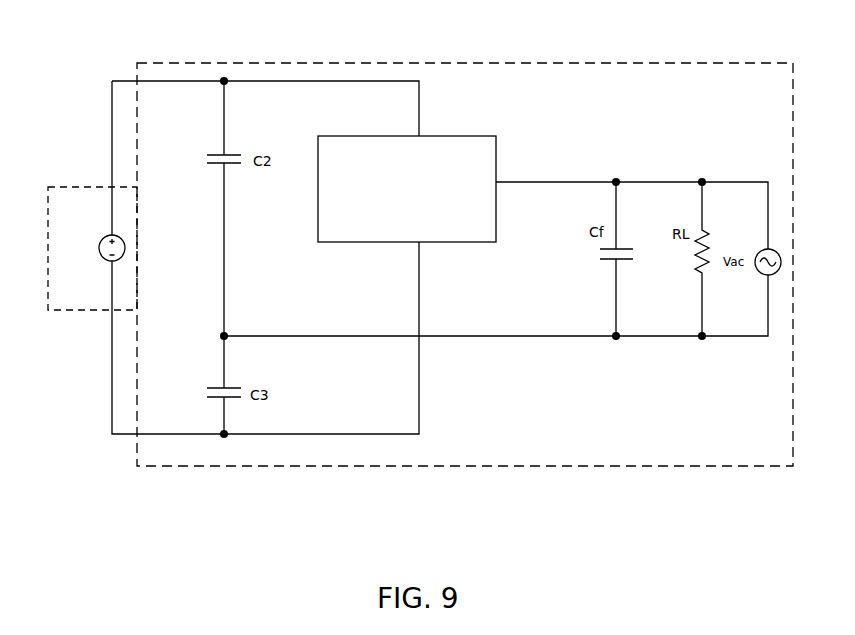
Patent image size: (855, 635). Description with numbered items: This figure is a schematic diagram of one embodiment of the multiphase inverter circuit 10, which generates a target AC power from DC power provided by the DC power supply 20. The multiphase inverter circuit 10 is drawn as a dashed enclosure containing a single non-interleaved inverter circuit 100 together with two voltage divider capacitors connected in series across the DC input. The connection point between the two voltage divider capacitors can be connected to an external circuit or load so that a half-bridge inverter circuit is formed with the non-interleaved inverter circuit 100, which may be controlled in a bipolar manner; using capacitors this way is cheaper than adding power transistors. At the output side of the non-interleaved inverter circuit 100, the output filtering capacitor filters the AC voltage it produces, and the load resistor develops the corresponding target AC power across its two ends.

The multiphase inverter circuit 10 is at (738, 63).
The DC power supply 20 is at (70, 187).
The non-interleaved inverter circuit 100 is at (487, 136).